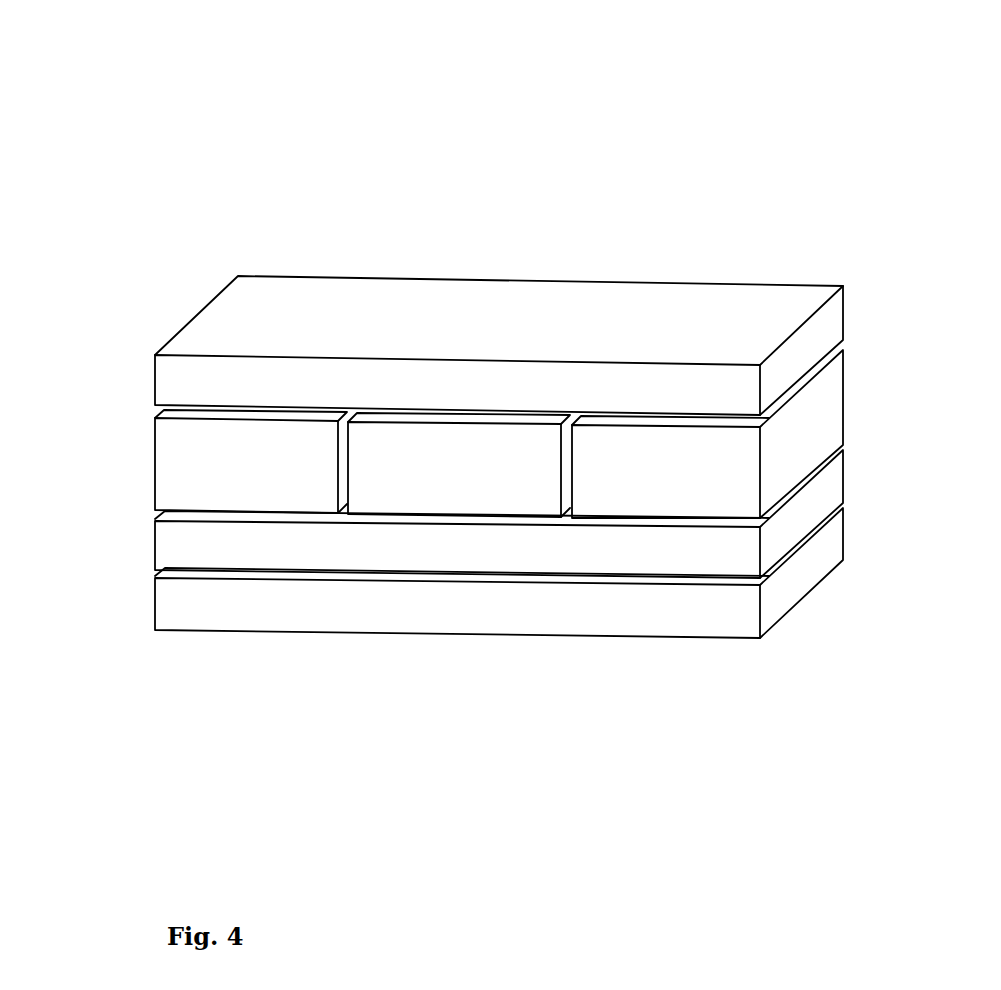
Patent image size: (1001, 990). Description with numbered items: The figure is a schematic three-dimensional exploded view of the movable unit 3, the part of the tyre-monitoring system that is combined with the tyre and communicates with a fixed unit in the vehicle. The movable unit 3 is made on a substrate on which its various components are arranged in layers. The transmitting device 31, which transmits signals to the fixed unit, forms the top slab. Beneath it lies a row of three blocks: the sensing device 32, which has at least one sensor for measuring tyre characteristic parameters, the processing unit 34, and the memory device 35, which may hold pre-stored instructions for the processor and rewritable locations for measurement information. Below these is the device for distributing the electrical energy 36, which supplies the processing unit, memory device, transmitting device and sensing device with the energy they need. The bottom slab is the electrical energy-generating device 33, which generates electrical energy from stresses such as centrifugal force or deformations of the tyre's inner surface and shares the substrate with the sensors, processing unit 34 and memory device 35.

The movable unit 3 is at (873, 184).
The transmitting device 31 is at (540, 333).
The sensing device 32 is at (217, 440).
The electrical energy-generating device 33 is at (597, 620).
The processing unit 34 is at (487, 460).
The memory device 35 is at (717, 493).
The device for distributing the electrical energy 36 is at (463, 540).